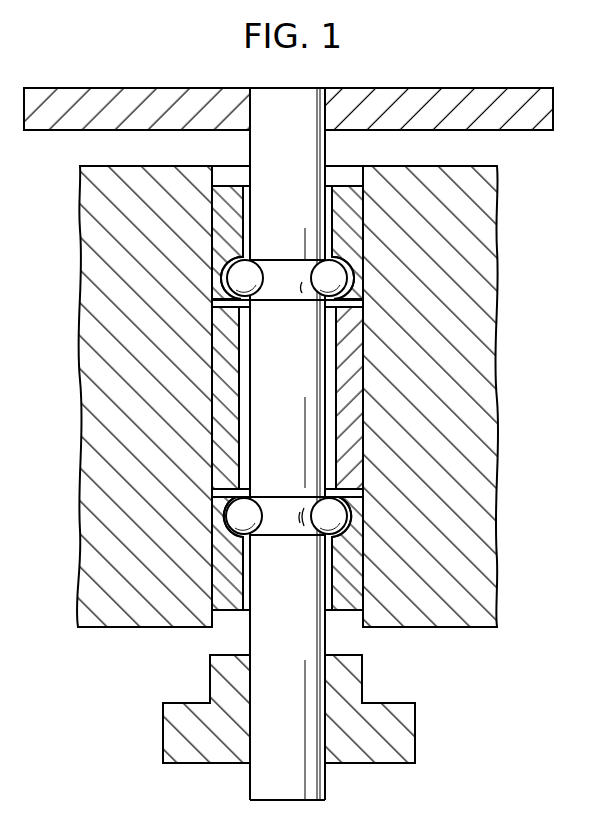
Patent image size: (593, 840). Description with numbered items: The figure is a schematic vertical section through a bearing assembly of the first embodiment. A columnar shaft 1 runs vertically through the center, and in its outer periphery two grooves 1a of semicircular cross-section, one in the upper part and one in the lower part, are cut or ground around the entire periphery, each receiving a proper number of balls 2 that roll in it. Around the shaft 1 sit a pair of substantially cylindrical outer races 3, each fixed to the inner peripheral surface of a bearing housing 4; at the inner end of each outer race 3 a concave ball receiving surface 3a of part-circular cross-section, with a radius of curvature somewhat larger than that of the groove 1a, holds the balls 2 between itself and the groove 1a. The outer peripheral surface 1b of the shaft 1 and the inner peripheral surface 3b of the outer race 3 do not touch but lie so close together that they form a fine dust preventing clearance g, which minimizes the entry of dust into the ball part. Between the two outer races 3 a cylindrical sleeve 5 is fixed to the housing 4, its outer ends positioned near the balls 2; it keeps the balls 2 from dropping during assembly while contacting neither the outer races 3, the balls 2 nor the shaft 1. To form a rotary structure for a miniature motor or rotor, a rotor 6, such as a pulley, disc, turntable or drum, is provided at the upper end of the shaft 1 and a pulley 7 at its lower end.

The columnar shaft 1 is at (291, 416).
The groove 1a is at (262, 279).
The outer peripheral surface of the shaft 1b is at (248, 620).
The balls 2 is at (257, 297).
The outer race 3 is at (212, 222).
The ball receiving surface 3a is at (362, 300).
The inner peripheral surface of the outer race 3b is at (333, 228).
The bearing housing 4 is at (488, 437).
The cylindrical sleeve 5 is at (358, 350).
The rotor 6 is at (428, 97).
The pulley 7 is at (394, 711).
The dust preventing clearance g is at (248, 172).